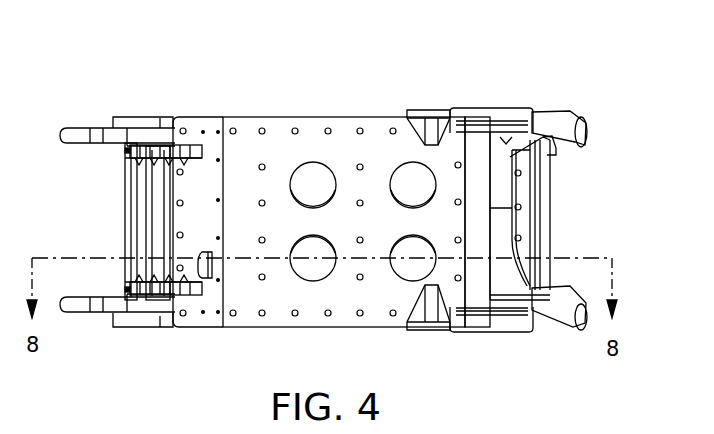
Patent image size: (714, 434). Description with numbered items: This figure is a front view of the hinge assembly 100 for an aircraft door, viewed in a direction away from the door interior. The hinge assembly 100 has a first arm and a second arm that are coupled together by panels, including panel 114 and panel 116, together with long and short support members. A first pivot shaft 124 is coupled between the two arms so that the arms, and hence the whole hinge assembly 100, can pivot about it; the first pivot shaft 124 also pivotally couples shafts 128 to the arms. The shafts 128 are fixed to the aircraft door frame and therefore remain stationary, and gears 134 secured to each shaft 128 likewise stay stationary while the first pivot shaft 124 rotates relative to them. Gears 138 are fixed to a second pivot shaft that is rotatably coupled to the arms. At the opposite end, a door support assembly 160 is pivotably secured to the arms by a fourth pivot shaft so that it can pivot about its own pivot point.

The hinge assembly 100 is at (146, 70).
The panel 114 is at (278, 124).
The panel 116 is at (194, 124).
The first pivot shaft 124 is at (136, 206).
The shafts 128 is at (78, 130).
The gears 134 is at (128, 151).
The gears 138 is at (166, 120).
The door support assembly 160 is at (588, 110).